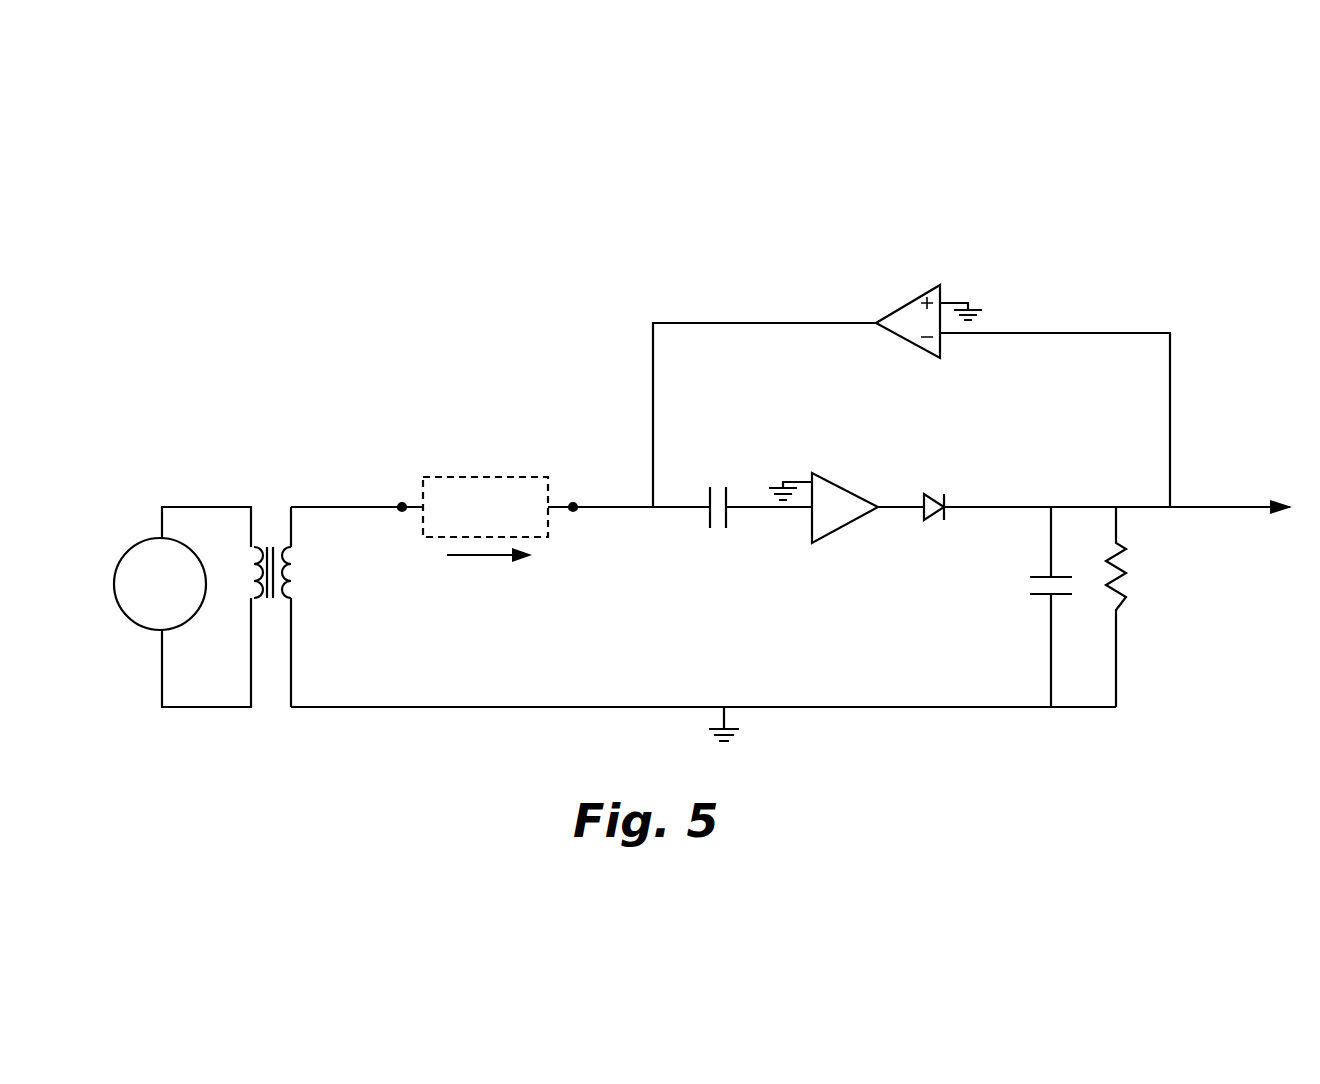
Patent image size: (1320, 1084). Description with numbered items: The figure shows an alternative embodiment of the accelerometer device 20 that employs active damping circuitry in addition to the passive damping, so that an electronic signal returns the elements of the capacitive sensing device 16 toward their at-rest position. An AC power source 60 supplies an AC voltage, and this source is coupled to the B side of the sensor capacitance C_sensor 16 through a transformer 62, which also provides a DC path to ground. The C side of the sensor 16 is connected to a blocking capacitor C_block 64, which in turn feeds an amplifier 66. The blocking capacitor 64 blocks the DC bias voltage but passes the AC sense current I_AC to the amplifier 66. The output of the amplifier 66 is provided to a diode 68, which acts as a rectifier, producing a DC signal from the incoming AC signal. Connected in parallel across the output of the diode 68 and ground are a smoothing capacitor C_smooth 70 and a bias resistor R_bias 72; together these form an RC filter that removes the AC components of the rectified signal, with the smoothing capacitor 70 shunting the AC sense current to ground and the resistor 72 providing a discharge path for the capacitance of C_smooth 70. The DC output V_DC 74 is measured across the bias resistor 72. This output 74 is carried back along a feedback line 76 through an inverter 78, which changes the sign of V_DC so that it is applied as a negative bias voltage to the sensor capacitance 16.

The device 20 is at (1188, 273).
The capacitive sensing device 16 is at (480, 475).
The AC power source 60 is at (138, 545).
The transformer 62 is at (305, 564).
The blocking capacitor 64 is at (730, 495).
The amplifier 66 is at (848, 488).
The diode 68 is at (937, 493).
The smoothing capacitor 70 is at (1038, 600).
The bias resistor 72 is at (1125, 570).
The output V_DC 74 is at (1228, 510).
The feedback line 76 is at (1170, 362).
The inverter 78 is at (912, 302).